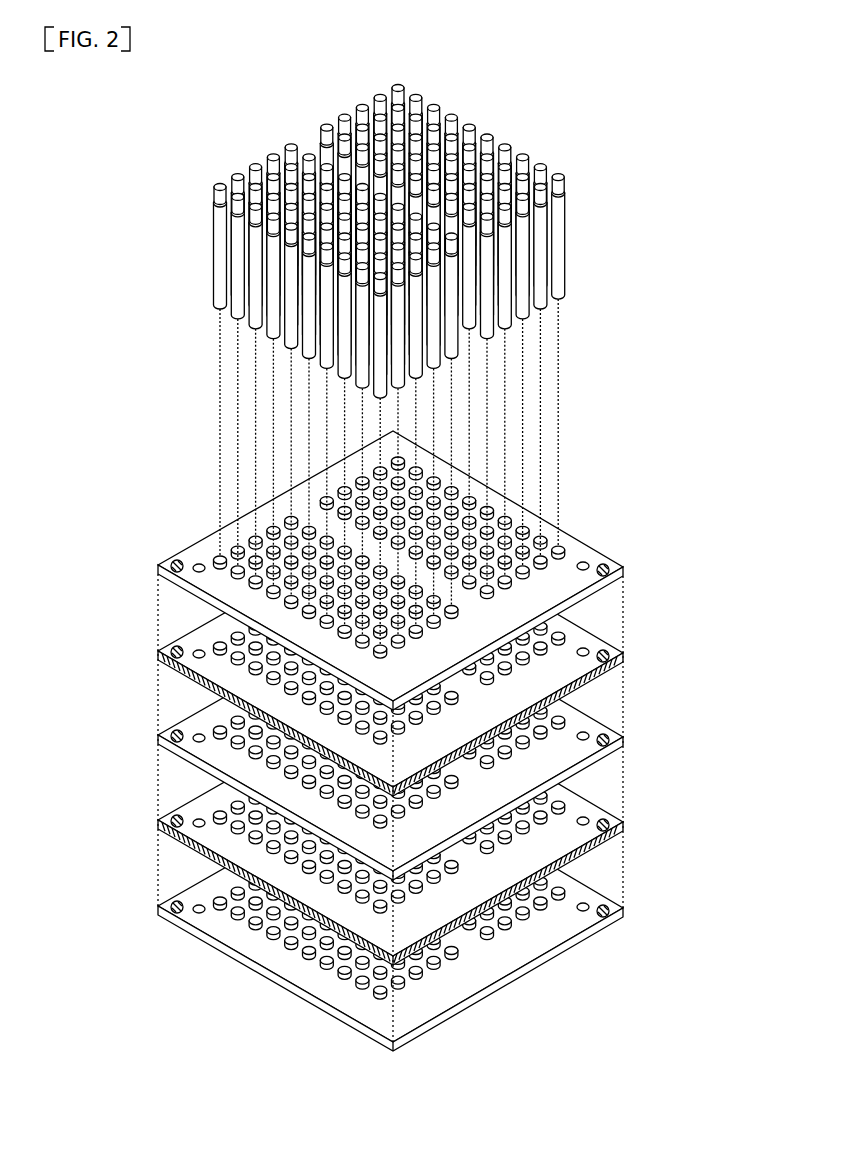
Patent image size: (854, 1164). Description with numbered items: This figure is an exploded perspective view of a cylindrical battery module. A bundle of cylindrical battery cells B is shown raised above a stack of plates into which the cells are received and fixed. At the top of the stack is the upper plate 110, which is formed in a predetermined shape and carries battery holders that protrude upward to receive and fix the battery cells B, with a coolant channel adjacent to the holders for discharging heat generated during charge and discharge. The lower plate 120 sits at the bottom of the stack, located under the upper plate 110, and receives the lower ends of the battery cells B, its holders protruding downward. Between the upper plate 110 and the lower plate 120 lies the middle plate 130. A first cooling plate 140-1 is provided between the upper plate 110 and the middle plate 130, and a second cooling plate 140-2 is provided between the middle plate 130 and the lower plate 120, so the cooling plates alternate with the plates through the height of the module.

The upper plate 110 is at (606, 556).
The first cooling plate 140-1 is at (606, 642).
The middle plate 130 is at (606, 726).
The second cooling plate 140-2 is at (606, 811).
The lower plate 120 is at (606, 897).
The cylindrical battery cells B is at (590, 178).